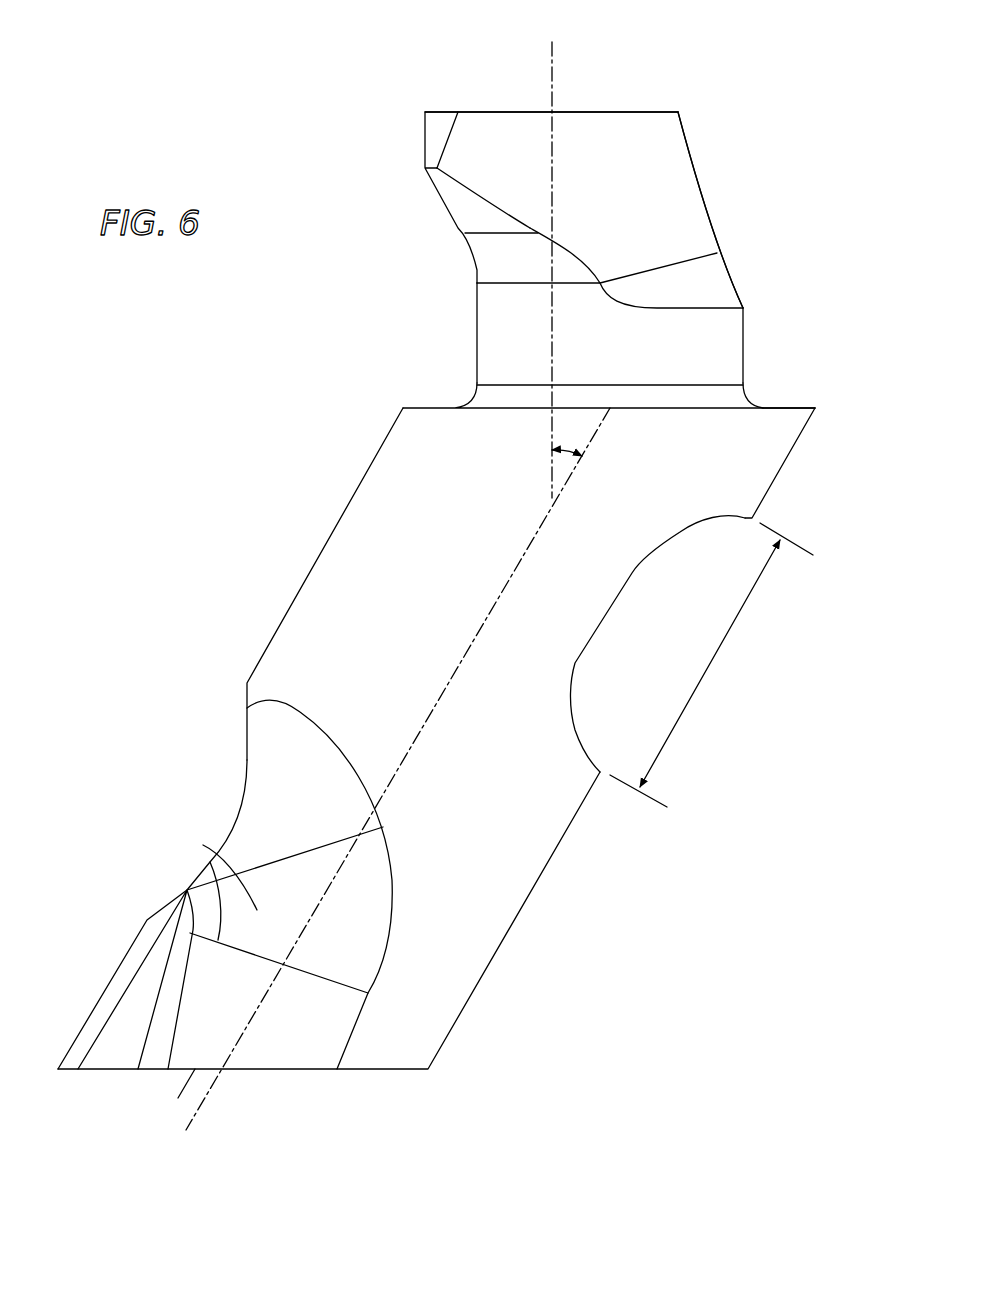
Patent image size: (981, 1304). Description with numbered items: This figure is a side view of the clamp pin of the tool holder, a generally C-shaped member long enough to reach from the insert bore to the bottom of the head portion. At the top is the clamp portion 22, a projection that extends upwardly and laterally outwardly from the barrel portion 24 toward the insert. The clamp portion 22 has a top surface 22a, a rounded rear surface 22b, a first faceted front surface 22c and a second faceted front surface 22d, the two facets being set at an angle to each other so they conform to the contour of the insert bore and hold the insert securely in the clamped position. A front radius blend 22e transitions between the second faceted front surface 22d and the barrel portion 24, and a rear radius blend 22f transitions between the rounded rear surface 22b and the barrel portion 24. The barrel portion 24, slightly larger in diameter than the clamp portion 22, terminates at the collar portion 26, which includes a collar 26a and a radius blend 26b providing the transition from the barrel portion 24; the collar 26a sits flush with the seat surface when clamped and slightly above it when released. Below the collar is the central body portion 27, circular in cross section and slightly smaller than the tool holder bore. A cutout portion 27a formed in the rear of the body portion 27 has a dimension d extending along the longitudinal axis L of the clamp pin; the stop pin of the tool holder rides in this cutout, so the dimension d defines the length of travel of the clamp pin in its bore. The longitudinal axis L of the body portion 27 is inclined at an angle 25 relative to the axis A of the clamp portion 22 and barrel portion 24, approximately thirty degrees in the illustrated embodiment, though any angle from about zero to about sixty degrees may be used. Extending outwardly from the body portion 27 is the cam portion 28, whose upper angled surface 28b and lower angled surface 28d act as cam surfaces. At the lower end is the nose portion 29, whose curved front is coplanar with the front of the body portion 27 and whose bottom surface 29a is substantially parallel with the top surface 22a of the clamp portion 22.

The clamp portion 22 is at (330, 162).
The top surface 22a is at (624, 112).
The rounded rear surface 22b is at (677, 170).
The first faceted front surface 22c is at (430, 135).
The second faceted front surface 22d is at (460, 213).
The front radius blend 22e is at (482, 262).
The rear radius blend 22f is at (718, 282).
The barrel portion 24 is at (443, 340).
The angle 25 is at (578, 452).
The collar portion 26 is at (455, 393).
The collar 26a is at (800, 403).
The radius blend 26b is at (746, 398).
The body portion 27 is at (290, 557).
The cutout portion 27a is at (632, 574).
The cam portion 28 is at (125, 912).
The upper angled surface 28b is at (270, 752).
The lower angled surface 28d is at (203, 845).
The nose portion 29 is at (58, 1052).
The bottom surface 29a is at (180, 1100).
The axis A is at (551, 55).
The longitudinal axis L is at (195, 1124).
The dimension d is at (711, 665).